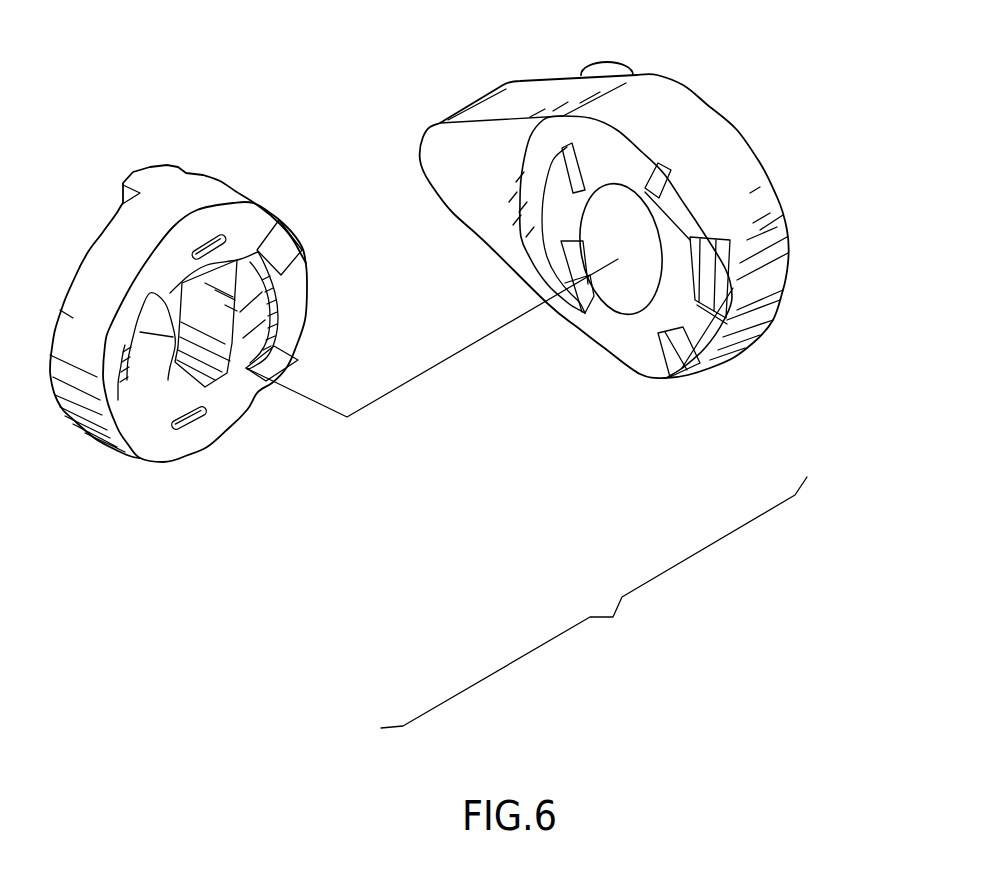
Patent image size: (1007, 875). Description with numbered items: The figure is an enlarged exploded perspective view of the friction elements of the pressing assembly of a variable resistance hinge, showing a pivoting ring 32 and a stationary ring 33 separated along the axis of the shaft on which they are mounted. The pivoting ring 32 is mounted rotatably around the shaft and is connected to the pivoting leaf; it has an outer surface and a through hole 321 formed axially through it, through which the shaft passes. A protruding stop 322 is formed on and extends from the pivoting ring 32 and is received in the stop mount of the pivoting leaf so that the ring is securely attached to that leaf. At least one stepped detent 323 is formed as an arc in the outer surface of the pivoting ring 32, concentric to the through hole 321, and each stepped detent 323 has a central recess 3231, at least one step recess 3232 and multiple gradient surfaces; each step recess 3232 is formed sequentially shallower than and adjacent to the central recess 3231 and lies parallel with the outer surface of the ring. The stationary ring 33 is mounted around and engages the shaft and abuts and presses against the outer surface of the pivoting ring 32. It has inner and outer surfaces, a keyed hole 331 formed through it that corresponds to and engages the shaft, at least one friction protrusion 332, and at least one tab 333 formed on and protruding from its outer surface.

The pivoting ring 32 is at (760, 237).
The through hole 321 is at (627, 298).
The protruding stop 322 is at (605, 72).
The stepped detent 323 is at (705, 337).
The central recess 3231 is at (735, 286).
The step recess 3232 is at (677, 192).
The stationary ring 33 is at (198, 185).
The keyed hole 331 is at (203, 380).
The friction protrusion 332 is at (150, 368).
The tab 333 is at (150, 173).